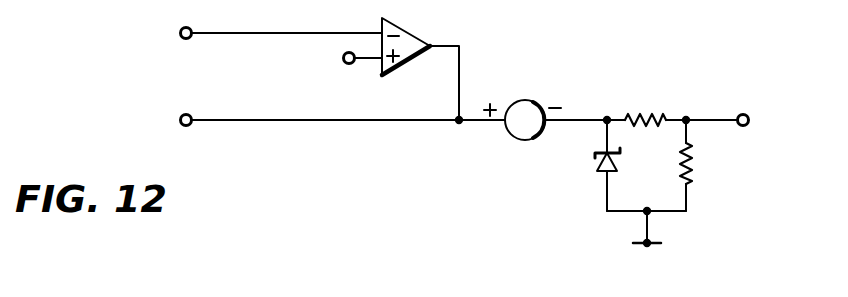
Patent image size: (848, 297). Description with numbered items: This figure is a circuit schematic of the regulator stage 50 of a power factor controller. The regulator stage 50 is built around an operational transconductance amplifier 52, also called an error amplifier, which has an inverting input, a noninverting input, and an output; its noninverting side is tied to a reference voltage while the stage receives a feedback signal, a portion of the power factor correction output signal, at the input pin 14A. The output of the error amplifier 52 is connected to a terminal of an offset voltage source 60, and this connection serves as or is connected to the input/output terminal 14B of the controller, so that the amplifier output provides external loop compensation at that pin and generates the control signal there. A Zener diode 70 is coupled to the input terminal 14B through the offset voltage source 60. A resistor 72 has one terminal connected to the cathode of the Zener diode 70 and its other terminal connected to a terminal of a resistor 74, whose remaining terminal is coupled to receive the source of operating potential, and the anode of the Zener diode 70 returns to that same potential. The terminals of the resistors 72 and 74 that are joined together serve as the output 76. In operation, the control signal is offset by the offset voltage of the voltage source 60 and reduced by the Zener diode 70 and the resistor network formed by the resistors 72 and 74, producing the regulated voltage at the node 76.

The regulator stage 50 is at (50, 148).
The input pin 14A is at (181, 30).
The input/output terminal 14B is at (181, 116).
The operational transconductance amplifier 52 is at (406, 62).
The offset voltage source 60 is at (541, 101).
The Zener diode 70 is at (594, 152).
The resistor 72 is at (646, 110).
The resistor 74 is at (696, 167).
The output 76 is at (688, 112).